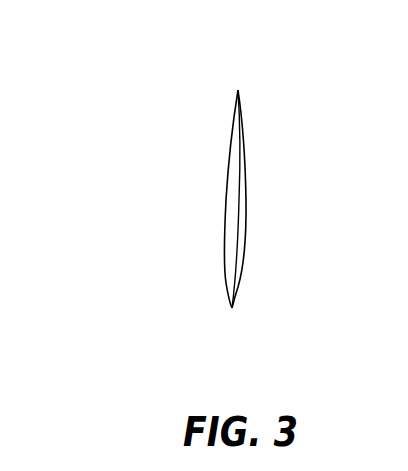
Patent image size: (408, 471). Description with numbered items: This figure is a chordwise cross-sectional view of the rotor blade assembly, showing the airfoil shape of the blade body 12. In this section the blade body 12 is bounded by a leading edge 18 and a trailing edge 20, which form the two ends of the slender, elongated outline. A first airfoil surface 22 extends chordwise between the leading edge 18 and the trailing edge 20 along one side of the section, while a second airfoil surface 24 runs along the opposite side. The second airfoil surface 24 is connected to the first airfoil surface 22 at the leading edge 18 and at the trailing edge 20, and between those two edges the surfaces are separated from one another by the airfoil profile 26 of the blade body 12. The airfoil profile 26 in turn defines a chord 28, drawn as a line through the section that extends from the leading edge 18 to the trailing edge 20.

The blade body 12 is at (197, 201).
The leading edge 18 is at (232, 308).
The trailing edge 20 is at (238, 90).
The first airfoil surface 22 is at (247, 183).
The second airfoil surface 24 is at (226, 233).
The airfoil profile 26 is at (245, 258).
The chord 28 is at (237, 228).